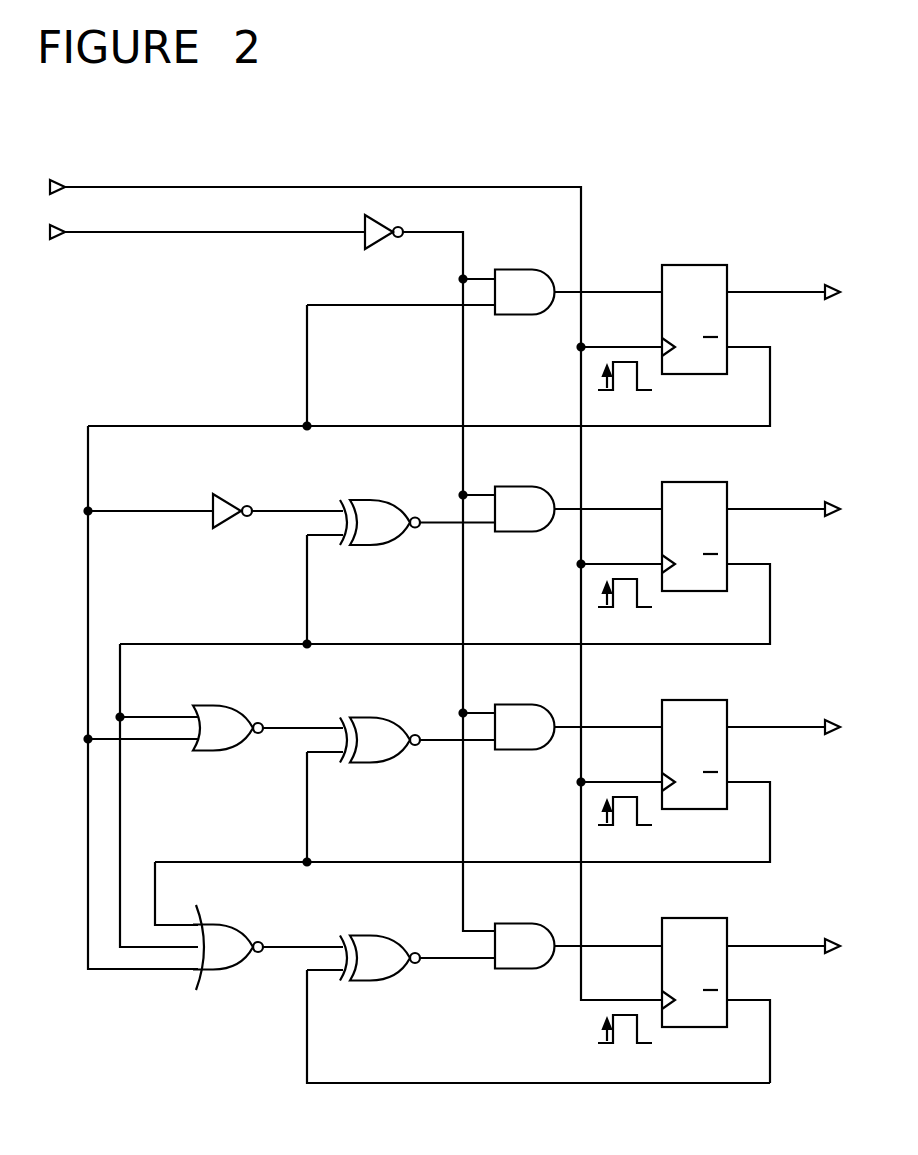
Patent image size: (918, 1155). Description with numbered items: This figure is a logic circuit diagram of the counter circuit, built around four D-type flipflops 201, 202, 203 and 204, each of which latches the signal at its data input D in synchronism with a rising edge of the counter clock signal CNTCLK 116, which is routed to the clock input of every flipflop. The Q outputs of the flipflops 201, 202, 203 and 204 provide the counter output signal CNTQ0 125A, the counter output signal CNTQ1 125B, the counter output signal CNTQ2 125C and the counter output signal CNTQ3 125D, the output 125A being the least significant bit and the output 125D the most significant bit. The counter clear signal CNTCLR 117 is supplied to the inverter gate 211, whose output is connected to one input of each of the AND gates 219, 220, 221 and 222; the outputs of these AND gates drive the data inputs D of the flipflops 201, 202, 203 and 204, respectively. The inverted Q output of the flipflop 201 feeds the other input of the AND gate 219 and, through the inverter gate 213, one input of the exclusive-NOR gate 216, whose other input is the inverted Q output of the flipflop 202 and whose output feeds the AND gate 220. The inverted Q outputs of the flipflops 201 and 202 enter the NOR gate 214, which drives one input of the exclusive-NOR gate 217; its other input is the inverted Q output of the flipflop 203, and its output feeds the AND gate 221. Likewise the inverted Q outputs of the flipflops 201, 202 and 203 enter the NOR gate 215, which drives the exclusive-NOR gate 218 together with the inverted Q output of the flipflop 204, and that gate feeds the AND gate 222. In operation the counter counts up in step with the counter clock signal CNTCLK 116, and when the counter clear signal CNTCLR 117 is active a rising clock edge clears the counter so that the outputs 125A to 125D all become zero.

The counter clock signal CNTCLK 116 is at (100, 187).
The counter clear signal CNTCLR 117 is at (100, 232).
The inverter gate 211 is at (382, 249).
The inverter gate 213 is at (242, 484).
The NOR gate 214 is at (238, 692).
The NOR gate 215 is at (238, 910).
The exclusive-NOR gate 216 is at (360, 500).
The exclusive-NOR gate 217 is at (360, 717).
The exclusive-NOR gate 218 is at (382, 921).
The AND gate 219 is at (505, 269).
The AND gate 220 is at (505, 486).
The AND gate 221 is at (505, 704).
The AND gate 222 is at (505, 923).
The D-type flipflop 201 is at (708, 252).
The D-type flipflop 202 is at (708, 469).
The D-type flipflop 203 is at (708, 687).
The D-type flipflop 204 is at (708, 905).
The counter output signal CNTQ0 125A is at (795, 276).
The counter output signal CNTQ1 125B is at (795, 493).
The counter output signal CNTQ2 125C is at (795, 711).
The counter output signal CNTQ3 125D is at (795, 930).